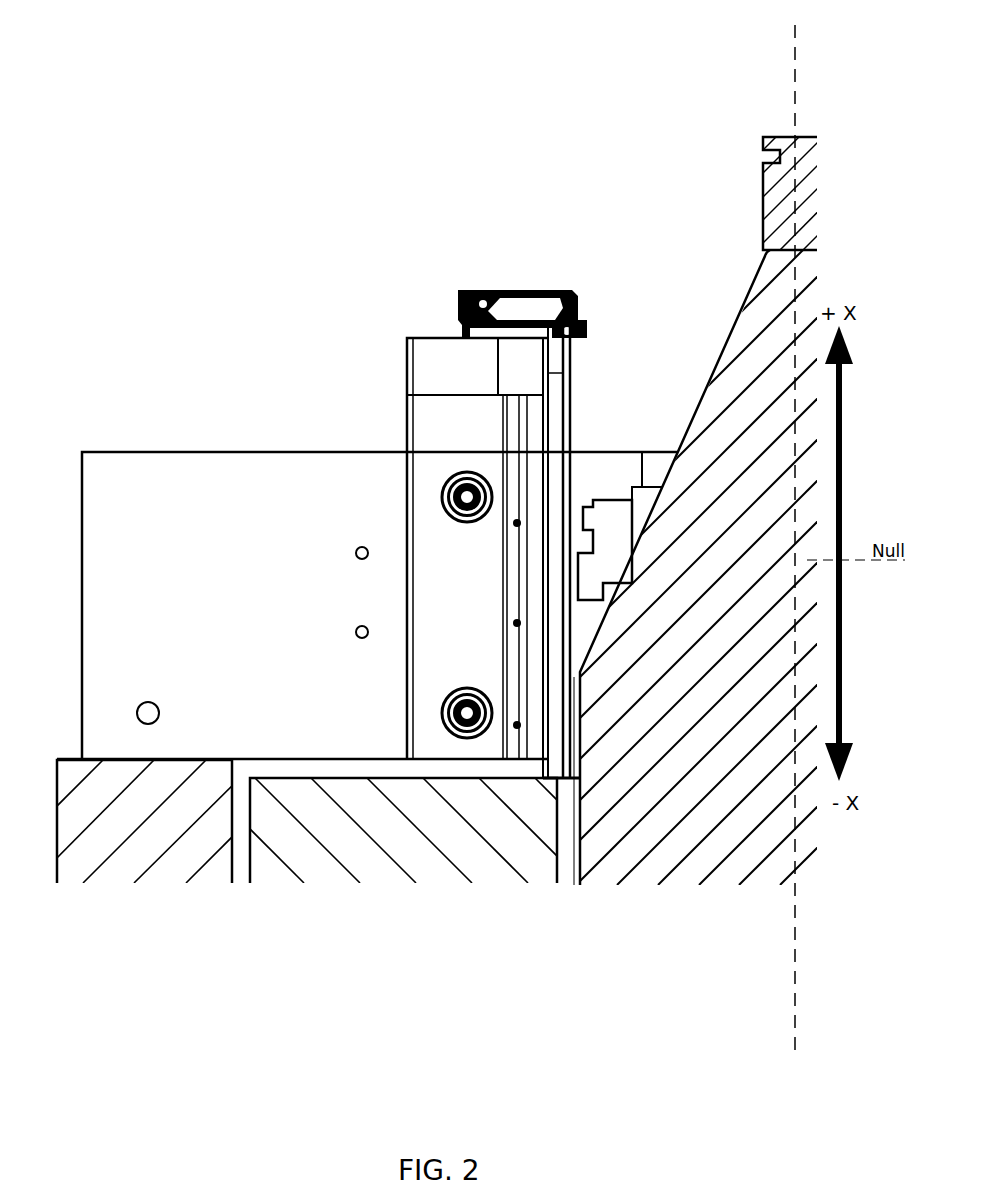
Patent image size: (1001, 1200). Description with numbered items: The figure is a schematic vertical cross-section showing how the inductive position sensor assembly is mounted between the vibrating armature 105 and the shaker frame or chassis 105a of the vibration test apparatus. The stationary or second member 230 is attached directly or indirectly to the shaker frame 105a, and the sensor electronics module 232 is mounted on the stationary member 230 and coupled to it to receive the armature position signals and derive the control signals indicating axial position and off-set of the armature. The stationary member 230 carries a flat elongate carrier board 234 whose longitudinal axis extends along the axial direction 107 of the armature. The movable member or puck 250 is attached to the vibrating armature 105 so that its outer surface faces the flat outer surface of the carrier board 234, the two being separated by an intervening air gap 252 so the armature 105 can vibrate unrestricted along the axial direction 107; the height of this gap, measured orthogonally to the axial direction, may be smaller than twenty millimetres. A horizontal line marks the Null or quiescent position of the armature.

The vibrating armature 105 is at (728, 885).
The shaker frame or chassis 105a is at (178, 452).
The axial direction 107 is at (792, 52).
The stationary or second member 230 is at (403, 582).
The sensor electronics module 232 is at (460, 318).
The carrier board 234 is at (572, 385).
The movable member or puck 250 is at (606, 498).
The air gap 252 is at (575, 590).